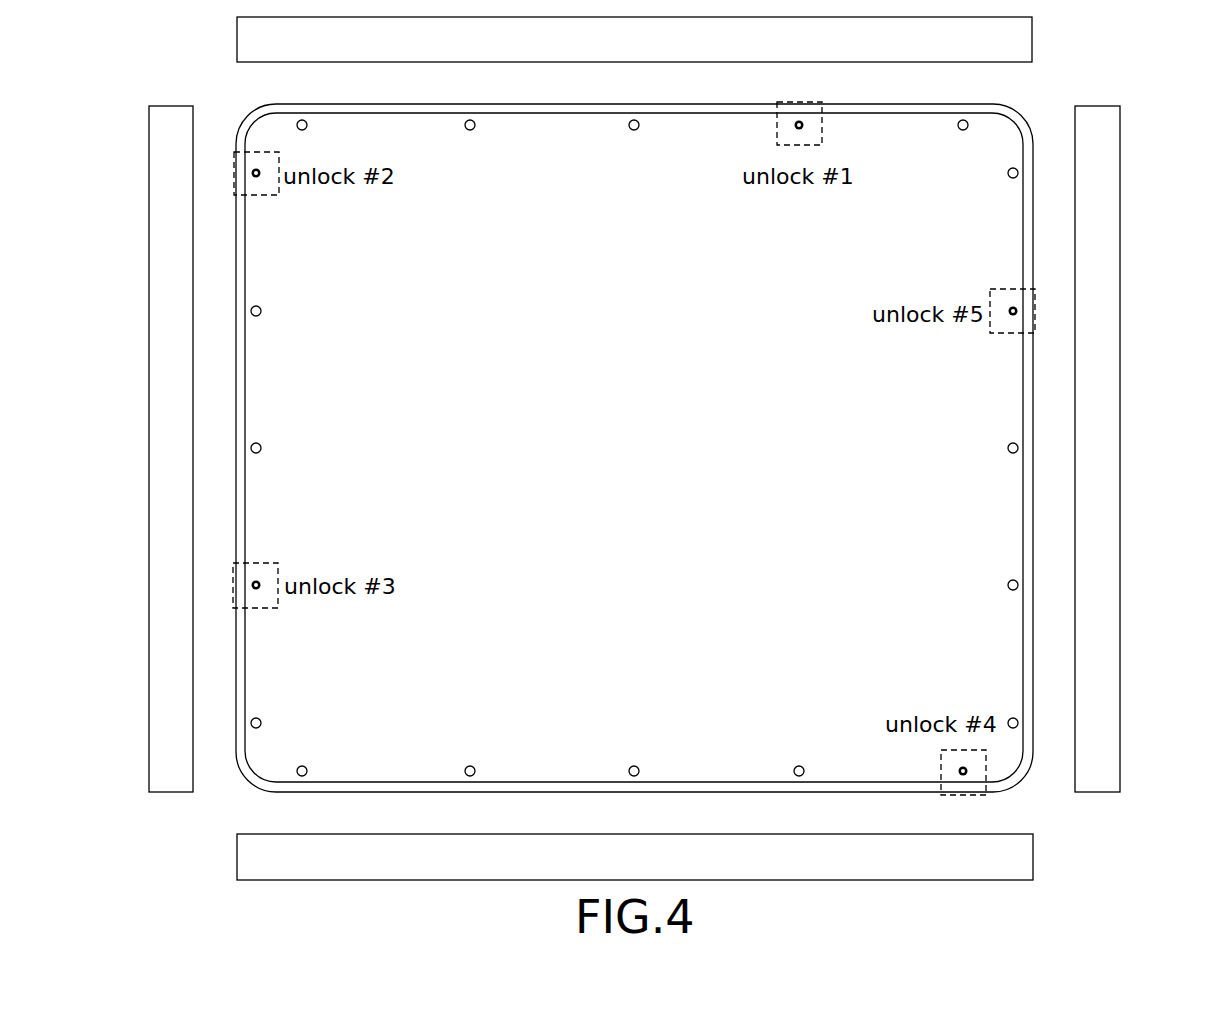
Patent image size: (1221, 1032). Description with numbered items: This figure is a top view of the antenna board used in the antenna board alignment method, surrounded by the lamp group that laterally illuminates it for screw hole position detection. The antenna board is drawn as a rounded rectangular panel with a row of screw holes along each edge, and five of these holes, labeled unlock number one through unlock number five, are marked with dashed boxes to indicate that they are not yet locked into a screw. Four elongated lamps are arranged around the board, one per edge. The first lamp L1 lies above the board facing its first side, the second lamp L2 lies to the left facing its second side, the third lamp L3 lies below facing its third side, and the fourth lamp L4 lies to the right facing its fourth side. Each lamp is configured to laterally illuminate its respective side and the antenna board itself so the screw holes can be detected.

The first lamp L1 is at (1020, 40).
The second lamp L2 is at (160, 448).
The third lamp L3 is at (1020, 856).
The fourth lamp L4 is at (1108, 448).